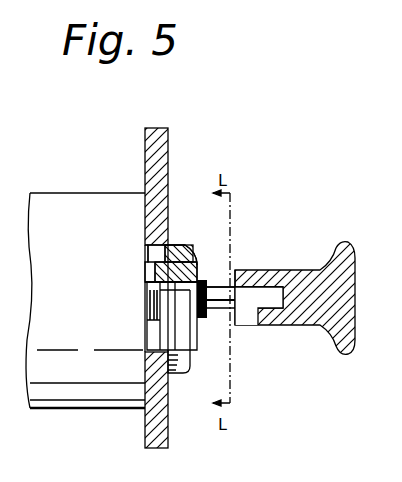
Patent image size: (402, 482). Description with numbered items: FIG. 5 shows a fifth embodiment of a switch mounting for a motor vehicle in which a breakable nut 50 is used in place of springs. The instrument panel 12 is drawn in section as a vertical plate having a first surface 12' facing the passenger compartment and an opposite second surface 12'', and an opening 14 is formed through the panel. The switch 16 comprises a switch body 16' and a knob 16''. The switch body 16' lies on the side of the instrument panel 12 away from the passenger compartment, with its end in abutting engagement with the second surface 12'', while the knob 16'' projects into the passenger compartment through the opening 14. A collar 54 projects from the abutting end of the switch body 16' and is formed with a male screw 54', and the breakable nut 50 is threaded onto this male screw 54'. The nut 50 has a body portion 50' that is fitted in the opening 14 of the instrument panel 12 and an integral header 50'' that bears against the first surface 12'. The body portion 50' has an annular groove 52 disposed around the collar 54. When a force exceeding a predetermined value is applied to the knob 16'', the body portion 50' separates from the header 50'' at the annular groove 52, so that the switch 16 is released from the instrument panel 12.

The instrument panel 12 is at (166, 266).
The first surface 12' is at (195, 151).
The second surface 12'' is at (120, 137).
The opening 14 is at (148, 246).
The switch 16 is at (85, 300).
The switch body 16' is at (46, 430).
The knob 16'' is at (295, 314).
The breakable nut 50 is at (176, 358).
The body portion 50' is at (144, 263).
The header 50'' is at (199, 192).
The annular groove 52 is at (186, 243).
The collar 54 is at (240, 318).
The male screw 54' is at (244, 255).